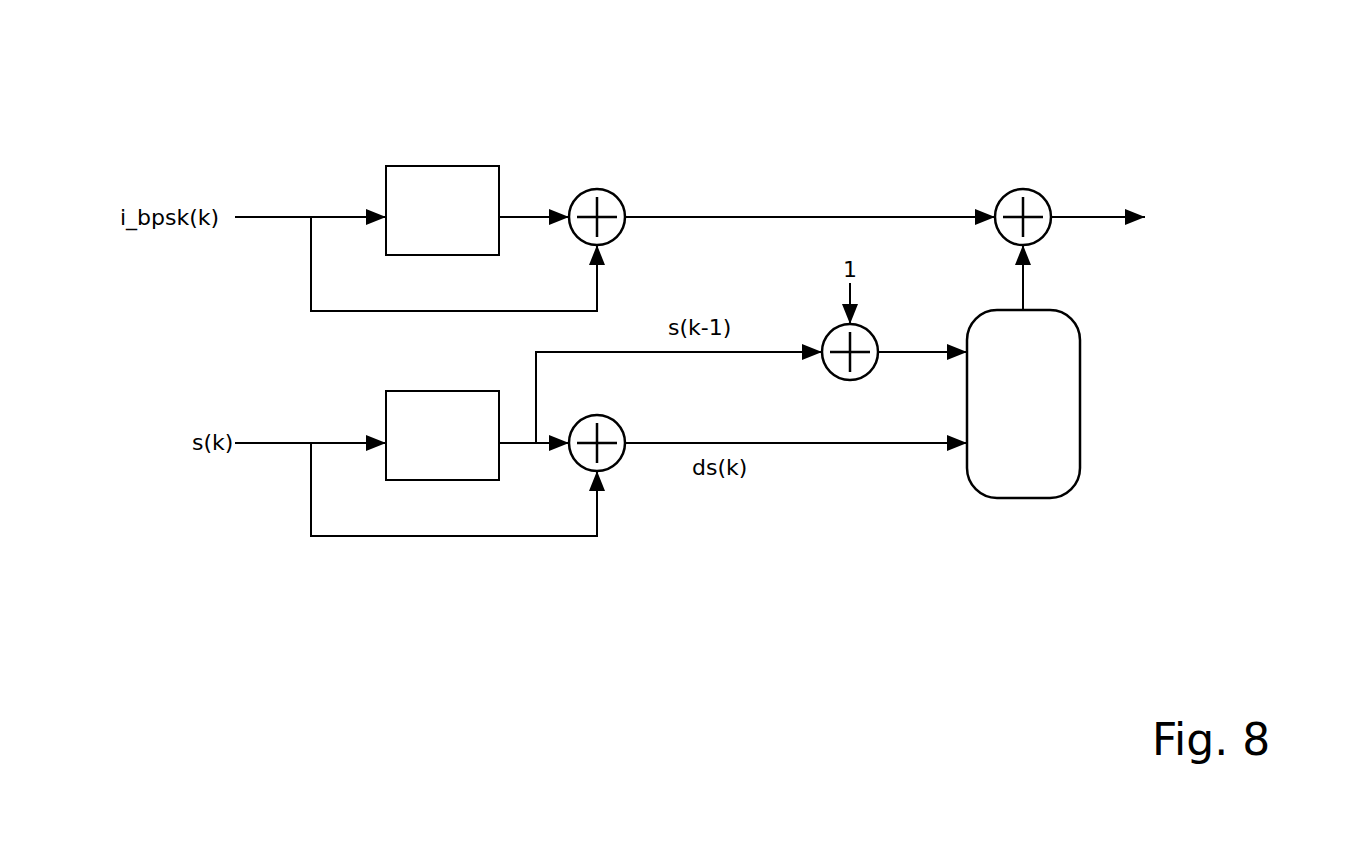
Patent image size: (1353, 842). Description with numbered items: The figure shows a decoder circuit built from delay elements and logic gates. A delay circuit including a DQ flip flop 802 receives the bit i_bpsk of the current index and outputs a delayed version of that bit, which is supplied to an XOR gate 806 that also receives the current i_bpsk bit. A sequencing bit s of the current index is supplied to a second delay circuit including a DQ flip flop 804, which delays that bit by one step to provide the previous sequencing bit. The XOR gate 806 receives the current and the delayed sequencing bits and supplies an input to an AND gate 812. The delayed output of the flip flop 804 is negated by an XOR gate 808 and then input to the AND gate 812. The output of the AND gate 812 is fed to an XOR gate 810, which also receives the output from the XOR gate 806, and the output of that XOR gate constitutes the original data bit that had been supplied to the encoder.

The DQ flip flop 802 is at (443, 164).
The DQ flip flop 804 is at (438, 390).
The XOR gate 806 is at (613, 192).
The XOR gate 808 is at (883, 320).
The XOR gate 810 is at (1030, 188).
The AND gate 812 is at (1063, 498).